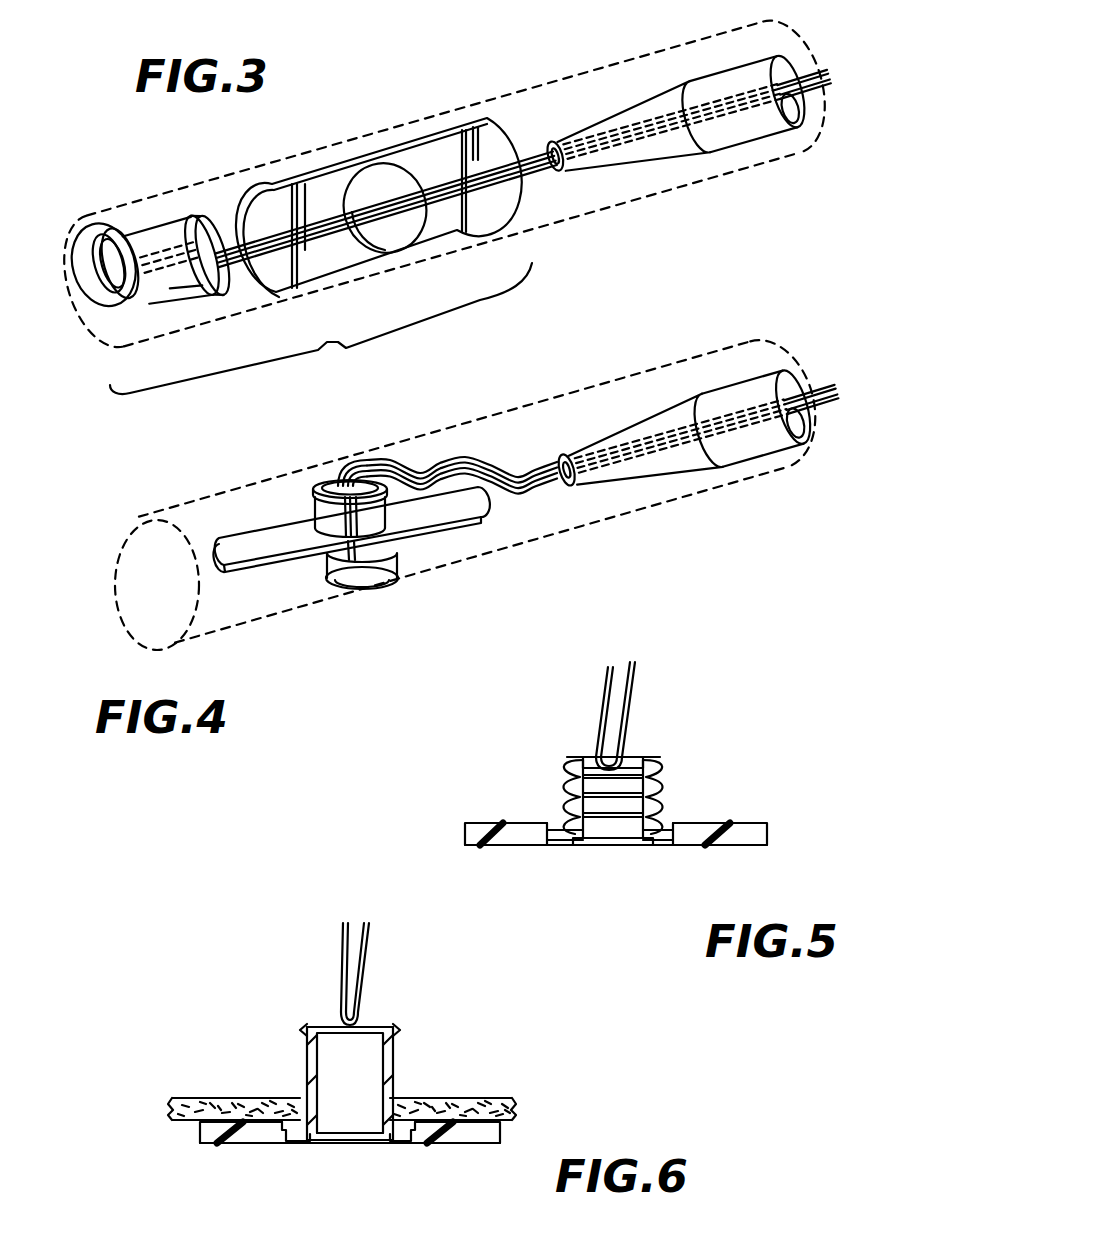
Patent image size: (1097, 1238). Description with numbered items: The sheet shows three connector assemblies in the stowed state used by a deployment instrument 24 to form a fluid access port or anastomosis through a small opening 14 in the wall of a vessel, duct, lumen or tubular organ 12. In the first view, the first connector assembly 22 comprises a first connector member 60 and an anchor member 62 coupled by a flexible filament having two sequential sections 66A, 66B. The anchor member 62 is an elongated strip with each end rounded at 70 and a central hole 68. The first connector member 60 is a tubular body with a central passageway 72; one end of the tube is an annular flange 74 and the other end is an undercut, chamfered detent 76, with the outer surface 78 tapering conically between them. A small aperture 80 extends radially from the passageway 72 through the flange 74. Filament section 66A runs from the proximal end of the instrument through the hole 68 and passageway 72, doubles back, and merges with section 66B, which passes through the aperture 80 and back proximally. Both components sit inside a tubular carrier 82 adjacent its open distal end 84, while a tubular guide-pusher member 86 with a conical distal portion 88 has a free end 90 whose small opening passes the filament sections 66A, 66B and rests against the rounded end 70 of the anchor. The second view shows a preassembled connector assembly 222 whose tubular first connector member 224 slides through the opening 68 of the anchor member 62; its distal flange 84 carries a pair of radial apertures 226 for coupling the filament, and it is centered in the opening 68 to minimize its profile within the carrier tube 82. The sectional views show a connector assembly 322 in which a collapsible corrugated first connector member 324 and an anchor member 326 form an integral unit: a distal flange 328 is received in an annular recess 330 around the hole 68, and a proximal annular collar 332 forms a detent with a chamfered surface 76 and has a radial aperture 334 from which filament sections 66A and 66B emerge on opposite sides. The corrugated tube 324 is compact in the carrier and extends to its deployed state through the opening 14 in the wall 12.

In FIG. 6, the vessel, duct, lumen or tubular organ 12 is at (508, 1092).
In FIG. 6, the opening 14 is at (298, 1103).
In FIG. 3, the first connector assembly 22 is at (321, 328).
In FIG. 3, the deployment instrument 24 is at (444, 201).
In FIG. 3, the first connector member 60 is at (117, 300).
In FIG. 3, the anchor member 62 is at (517, 190).
In FIG. 4, the anchor member 62 is at (262, 558).
In FIG. 3, the filament section 66A is at (330, 250).
In FIG. 4, the filament section 66A is at (443, 452).
In FIG. 5, the filament section 66A is at (607, 698).
In FIG. 6, the filament section 66A is at (345, 953).
In FIG. 3, the filament section 66B is at (314, 185).
In FIG. 4, the filament section 66B is at (733, 392).
In FIG. 5, the filament section 66B is at (633, 674).
In FIG. 6, the filament section 66B is at (366, 947).
In FIG. 3, the hole 68 is at (383, 168).
In FIG. 4, the hole 68 is at (320, 512).
In FIG. 5, the hole 68 is at (608, 846).
In FIG. 6, the hole 68 is at (338, 1140).
In FIG. 3, the rounded end 70 is at (261, 198).
In FIG. 4, the rounded end 70 is at (218, 563).
In FIG. 5, the rounded end 70 is at (462, 833).
In FIG. 6, the rounded end 70 is at (195, 1137).
In FIG. 3, the central passageway 72 is at (98, 302).
In FIG. 4, the central passageway 72 is at (330, 482).
In FIG. 5, the central passageway 72 is at (626, 828).
In FIG. 6, the central passageway 72 is at (357, 1120).
In FIG. 3, the annular flange 74 is at (83, 257).
In FIG. 3, the detent 76 is at (228, 275).
In FIG. 4, the detent 76 is at (325, 480).
In FIG. 5, the detent 76 is at (657, 758).
In FIG. 6, the detent 76 is at (394, 1031).
In FIG. 3, the outer surface 78 is at (207, 293).
In FIG. 3, the aperture 80 is at (124, 232).
In FIG. 3, the carrier 82 is at (523, 93).
In FIG. 4, the carrier 82 is at (597, 522).
In FIG. 3, the open distal end 84 is at (173, 300).
In FIG. 4, the open distal end 84 is at (405, 563).
In FIG. 3, the guide-pusher member 86 is at (743, 133).
In FIG. 4, the guide-pusher member 86 is at (742, 462).
In FIG. 3, the conical distal portion 88 is at (655, 160).
In FIG. 4, the conical distal portion 88 is at (668, 414).
In FIG. 3, the free end 90 is at (553, 147).
In FIG. 4, the free end 90 is at (560, 460).
In FIG. 4, the connector assembly 222 is at (327, 547).
In FIG. 4, the first connector member 224 is at (318, 513).
In FIG. 4, the apertures 226 is at (335, 575).
In FIG. 5, the connector assembly 322 is at (488, 852).
In FIG. 6, the connector assembly 322 is at (350, 1132).
In FIG. 5, the first connector member 324 is at (663, 790).
In FIG. 6, the first connector member 324 is at (394, 1070).
In FIG. 5, the anchor member 326 is at (524, 827).
In FIG. 6, the anchor member 326 is at (235, 1137).
In FIG. 5, the flange 328 is at (688, 843).
In FIG. 6, the flange 328 is at (420, 1140).
In FIG. 5, the annular recess 330 is at (548, 836).
In FIG. 6, the annular recess 330 is at (272, 1137).
In FIG. 5, the annular collar 332 is at (568, 758).
In FIG. 6, the annular collar 332 is at (305, 1025).
In FIG. 5, the aperture 334 is at (598, 768).
In FIG. 6, the aperture 334 is at (348, 1030).